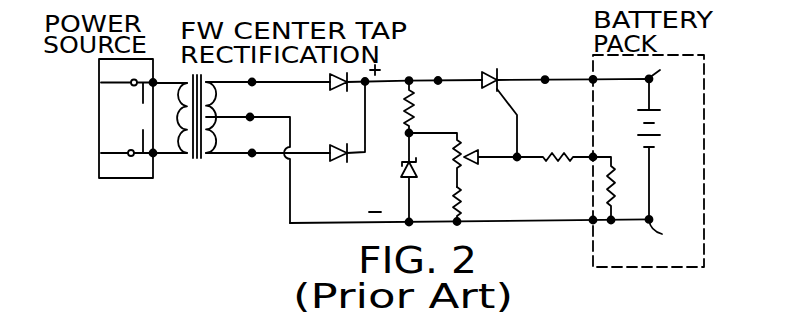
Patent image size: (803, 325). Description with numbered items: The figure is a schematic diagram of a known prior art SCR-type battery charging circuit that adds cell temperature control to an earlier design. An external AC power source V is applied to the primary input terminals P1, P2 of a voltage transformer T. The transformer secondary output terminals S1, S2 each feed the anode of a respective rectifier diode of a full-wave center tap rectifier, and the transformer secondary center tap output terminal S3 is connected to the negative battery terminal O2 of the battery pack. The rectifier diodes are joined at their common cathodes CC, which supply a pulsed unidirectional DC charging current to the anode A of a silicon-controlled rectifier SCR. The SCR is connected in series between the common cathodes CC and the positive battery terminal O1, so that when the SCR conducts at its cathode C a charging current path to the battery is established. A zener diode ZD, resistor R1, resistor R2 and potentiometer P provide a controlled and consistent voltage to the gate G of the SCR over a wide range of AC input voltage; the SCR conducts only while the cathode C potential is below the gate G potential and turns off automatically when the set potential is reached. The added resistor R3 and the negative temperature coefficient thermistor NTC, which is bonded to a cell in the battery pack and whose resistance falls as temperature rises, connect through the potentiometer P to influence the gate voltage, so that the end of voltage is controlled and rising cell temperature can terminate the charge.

The primary input terminal P1 is at (101, 83).
The primary input terminal P2 is at (101, 153).
The AC power source V is at (143, 118).
The voltage transformer T is at (196, 130).
The transformer secondary output terminal S1 is at (252, 83).
The transformer secondary output terminal S2 is at (252, 154).
The transformer secondary center tap output terminal S3 is at (250, 117).
The common cathodes of rectifier diodes CC is at (349, 90).
The resistor R1 is at (424, 106).
The zener diode ZD is at (392, 179).
The potentiometer P is at (463, 160).
The resistor R2 is at (476, 206).
The resistor R3 is at (555, 144).
The negative temperature coefficient thermistor NTC is at (577, 190).
The silicon-controlled rectifier SCR is at (485, 62).
The anode of SCR A is at (440, 78).
The cathode of SCR C is at (545, 78).
The gate of SCR G is at (498, 90).
The positive battery terminal O1 is at (671, 78).
The negative battery terminal O2 is at (671, 237).